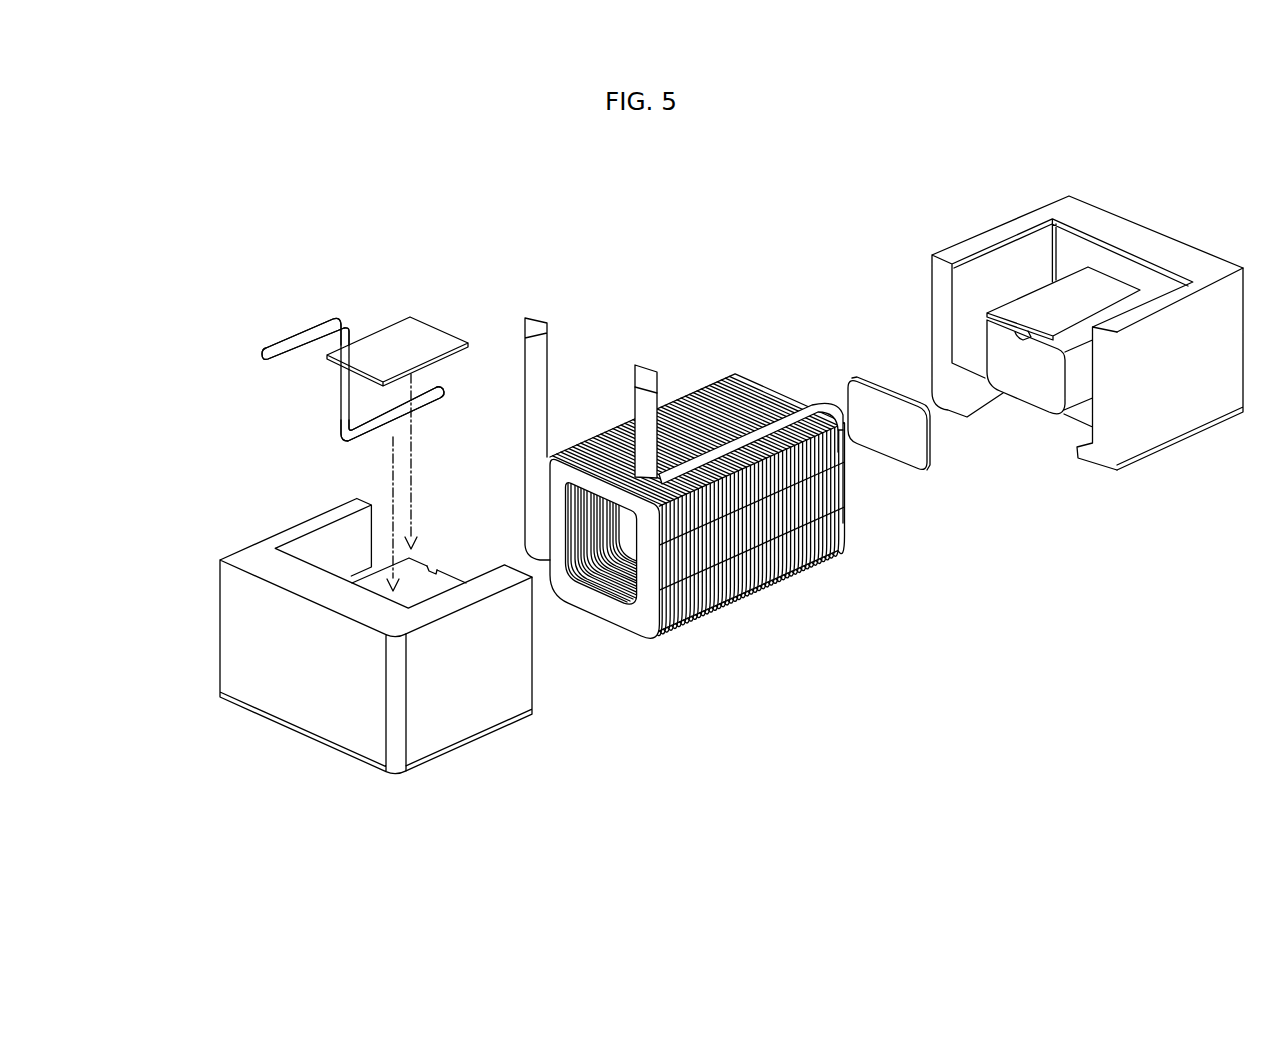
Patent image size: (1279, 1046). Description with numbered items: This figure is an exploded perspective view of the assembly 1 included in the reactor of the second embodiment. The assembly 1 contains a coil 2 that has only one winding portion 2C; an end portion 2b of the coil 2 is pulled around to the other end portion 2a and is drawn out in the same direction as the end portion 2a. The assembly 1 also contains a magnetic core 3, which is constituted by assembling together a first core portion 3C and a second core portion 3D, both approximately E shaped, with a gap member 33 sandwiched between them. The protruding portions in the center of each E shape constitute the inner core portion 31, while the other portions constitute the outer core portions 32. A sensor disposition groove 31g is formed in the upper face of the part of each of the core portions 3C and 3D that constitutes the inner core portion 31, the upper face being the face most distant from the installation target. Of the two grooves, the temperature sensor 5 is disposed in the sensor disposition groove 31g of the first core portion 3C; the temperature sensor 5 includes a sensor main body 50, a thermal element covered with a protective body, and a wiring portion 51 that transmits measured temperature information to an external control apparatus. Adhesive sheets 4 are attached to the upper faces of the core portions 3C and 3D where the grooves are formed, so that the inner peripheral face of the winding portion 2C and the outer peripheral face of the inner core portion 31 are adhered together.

The assembly 1 is at (530, 152).
The coil 2 is at (648, 447).
The winding portion 2C is at (718, 378).
The end portion 2a is at (522, 328).
The end portion 2b is at (641, 378).
The magnetic core 3 is at (744, 515).
The first core portion 3C is at (452, 754).
The second core portion 3D is at (1137, 465).
The inner core portion 31 is at (453, 580).
The sensor disposition groove 31g is at (430, 570).
The outer core portion 32 is at (483, 718).
The gap member 33 is at (851, 385).
The adhesive sheet 4 is at (392, 332).
The temperature sensor 5 is at (343, 388).
The sensor main body 50 is at (434, 404).
The wiring portion 51 is at (284, 337).